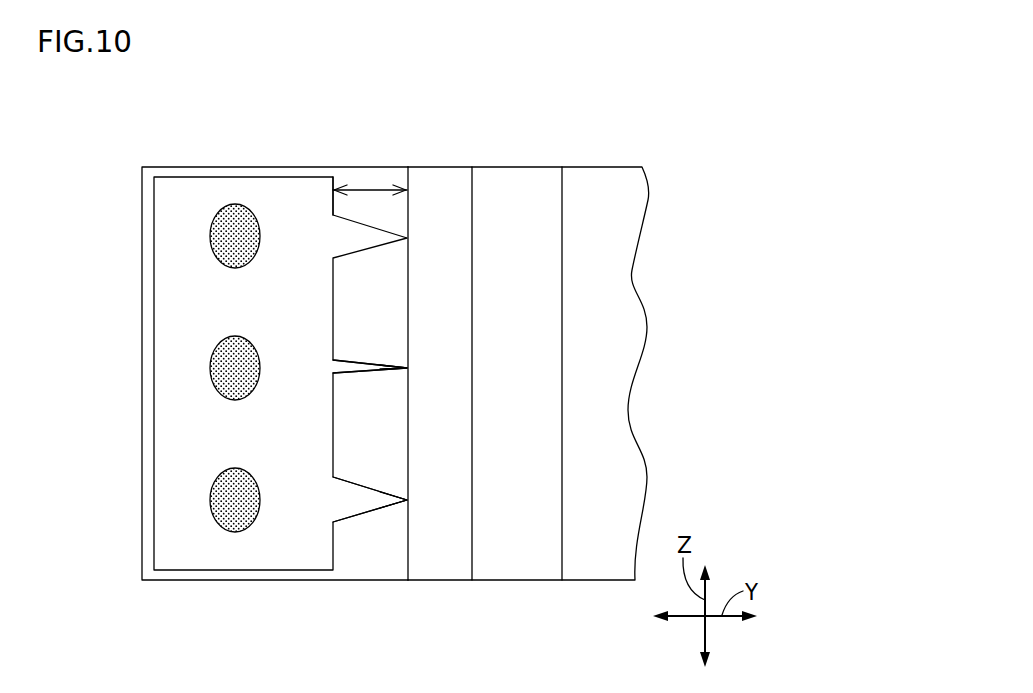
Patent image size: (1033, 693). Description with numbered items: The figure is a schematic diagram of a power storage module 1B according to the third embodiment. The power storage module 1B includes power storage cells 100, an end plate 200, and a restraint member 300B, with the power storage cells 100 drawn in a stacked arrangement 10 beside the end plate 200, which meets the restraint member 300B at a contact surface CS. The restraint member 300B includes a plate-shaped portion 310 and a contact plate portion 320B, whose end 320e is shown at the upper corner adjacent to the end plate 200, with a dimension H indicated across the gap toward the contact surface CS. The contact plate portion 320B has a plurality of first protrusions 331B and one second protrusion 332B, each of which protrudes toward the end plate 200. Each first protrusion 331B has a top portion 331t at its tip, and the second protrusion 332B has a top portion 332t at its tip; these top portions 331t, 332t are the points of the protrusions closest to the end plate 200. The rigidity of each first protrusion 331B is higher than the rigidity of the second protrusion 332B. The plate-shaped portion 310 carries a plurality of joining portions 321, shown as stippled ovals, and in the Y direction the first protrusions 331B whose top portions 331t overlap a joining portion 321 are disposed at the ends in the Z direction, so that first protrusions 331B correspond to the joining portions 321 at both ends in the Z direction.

The power storage module 1B is at (175, 135).
The restraint member 300B is at (318, 108).
The plate-shaped portion 310 is at (229, 170).
The contact plate portion 320B is at (293, 190).
The end of support portion 320e is at (334, 186).
The contact surface CS is at (408, 158).
The height H is at (372, 190).
The end plate 200 is at (438, 188).
The stacked body 10 is at (627, 108).
The power storage cell 100 is at (517, 188).
The top portion 332t is at (409, 368).
The top portion 331t is at (409, 500).
The joining portion 321 is at (232, 515).
The second protrusion 332B is at (346, 365).
The first protrusion 331B is at (375, 510).